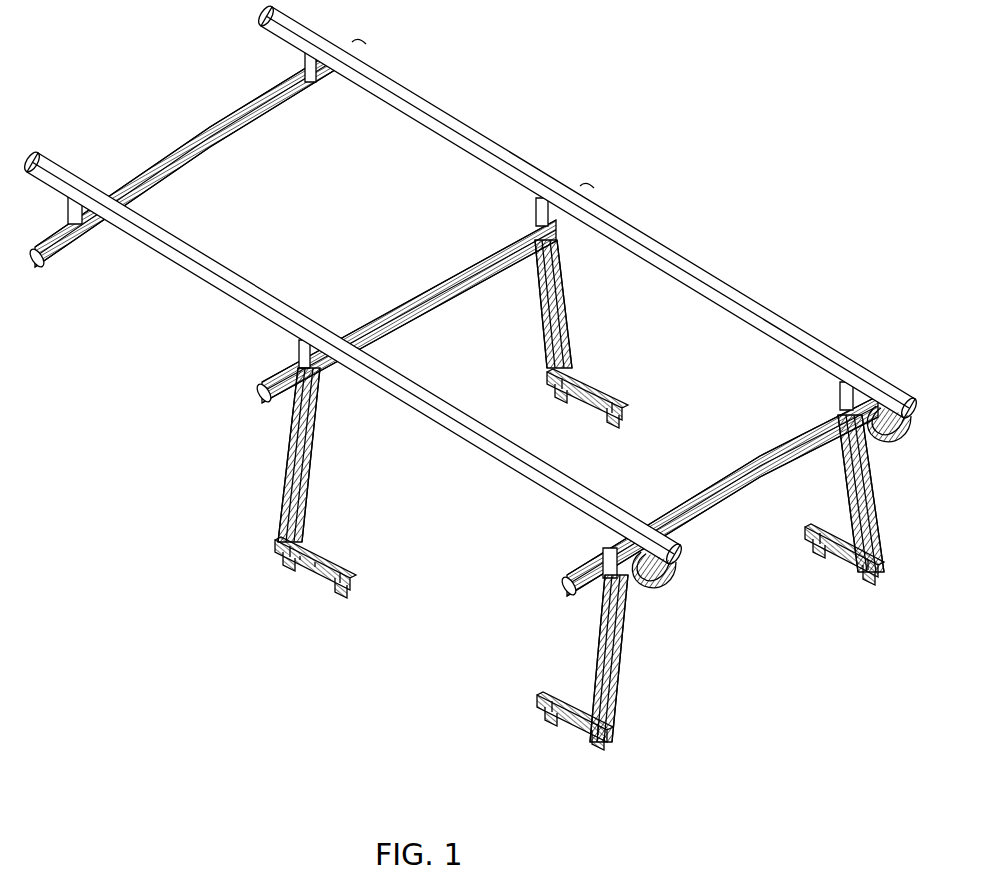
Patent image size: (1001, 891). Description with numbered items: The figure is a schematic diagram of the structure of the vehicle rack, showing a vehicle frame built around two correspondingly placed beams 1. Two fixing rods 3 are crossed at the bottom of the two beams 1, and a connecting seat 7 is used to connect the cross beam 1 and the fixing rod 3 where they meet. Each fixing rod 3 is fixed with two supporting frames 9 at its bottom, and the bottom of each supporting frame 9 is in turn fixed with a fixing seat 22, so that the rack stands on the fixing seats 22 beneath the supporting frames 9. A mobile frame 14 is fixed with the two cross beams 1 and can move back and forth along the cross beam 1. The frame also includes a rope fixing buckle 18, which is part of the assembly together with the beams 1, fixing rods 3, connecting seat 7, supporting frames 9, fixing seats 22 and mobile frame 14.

The beam 1 is at (645, 242).
The fixing rod 3 is at (453, 273).
The connecting seat 7 is at (303, 357).
The supporting frame 9 is at (303, 443).
The mobile frame 14 is at (212, 143).
The rope fixing buckle 18 is at (146, 250).
The fixing seat 22 is at (307, 557).